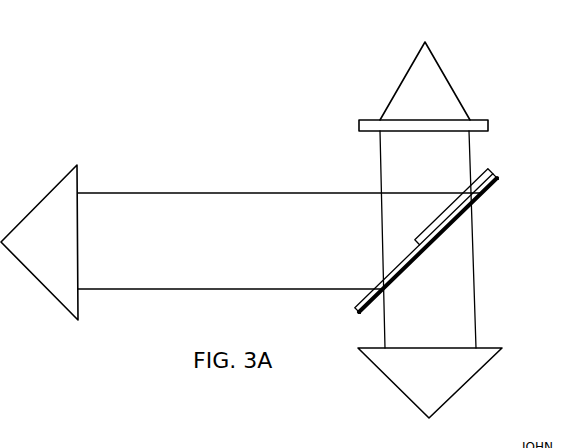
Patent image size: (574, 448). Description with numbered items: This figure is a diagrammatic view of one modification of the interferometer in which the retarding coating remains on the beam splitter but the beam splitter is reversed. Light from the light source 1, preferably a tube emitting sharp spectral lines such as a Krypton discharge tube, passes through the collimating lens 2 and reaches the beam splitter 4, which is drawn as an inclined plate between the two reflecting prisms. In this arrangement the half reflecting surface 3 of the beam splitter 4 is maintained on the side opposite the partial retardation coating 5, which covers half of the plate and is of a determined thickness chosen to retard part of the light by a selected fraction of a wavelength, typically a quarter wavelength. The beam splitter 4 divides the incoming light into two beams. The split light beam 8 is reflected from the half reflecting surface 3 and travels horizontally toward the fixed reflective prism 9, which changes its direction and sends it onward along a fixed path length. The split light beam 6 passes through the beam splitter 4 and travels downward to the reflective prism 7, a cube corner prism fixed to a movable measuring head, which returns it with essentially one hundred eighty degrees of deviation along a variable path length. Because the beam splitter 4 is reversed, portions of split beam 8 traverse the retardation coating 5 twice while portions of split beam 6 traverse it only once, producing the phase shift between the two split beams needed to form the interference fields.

The light source 1 is at (426, 42).
The collimating lens 2 is at (489, 118).
The half reflecting surface 3 is at (497, 187).
The beam splitter 4 is at (497, 173).
The partial retardation coating 5 is at (482, 163).
The split light beam 6 is at (476, 313).
The reflective prism 7 is at (488, 363).
The split light beam 8 is at (266, 193).
The reflective prism 9 is at (42, 198).